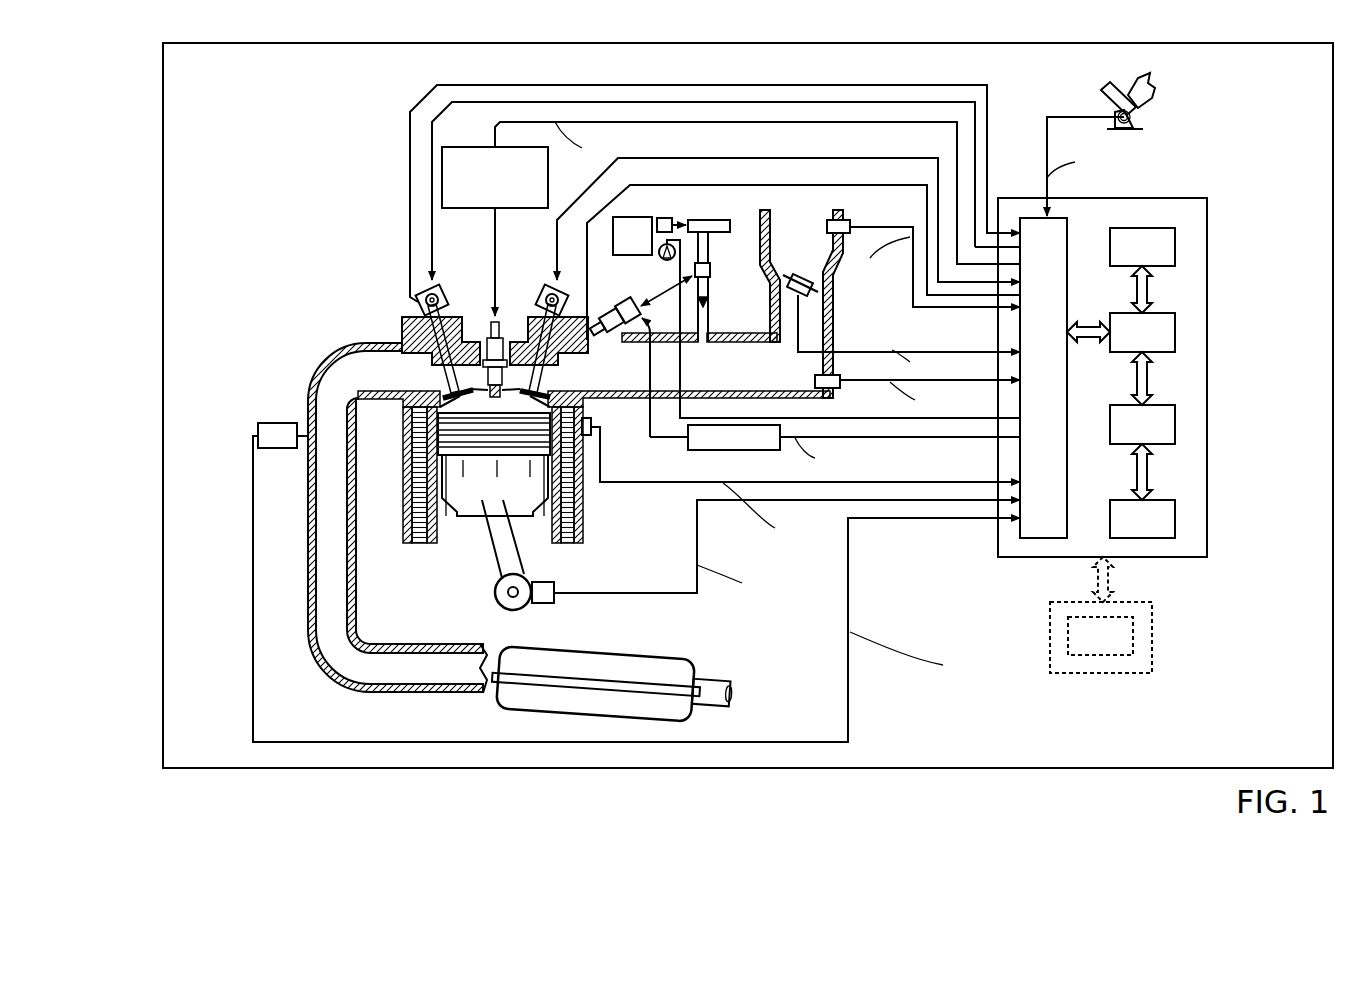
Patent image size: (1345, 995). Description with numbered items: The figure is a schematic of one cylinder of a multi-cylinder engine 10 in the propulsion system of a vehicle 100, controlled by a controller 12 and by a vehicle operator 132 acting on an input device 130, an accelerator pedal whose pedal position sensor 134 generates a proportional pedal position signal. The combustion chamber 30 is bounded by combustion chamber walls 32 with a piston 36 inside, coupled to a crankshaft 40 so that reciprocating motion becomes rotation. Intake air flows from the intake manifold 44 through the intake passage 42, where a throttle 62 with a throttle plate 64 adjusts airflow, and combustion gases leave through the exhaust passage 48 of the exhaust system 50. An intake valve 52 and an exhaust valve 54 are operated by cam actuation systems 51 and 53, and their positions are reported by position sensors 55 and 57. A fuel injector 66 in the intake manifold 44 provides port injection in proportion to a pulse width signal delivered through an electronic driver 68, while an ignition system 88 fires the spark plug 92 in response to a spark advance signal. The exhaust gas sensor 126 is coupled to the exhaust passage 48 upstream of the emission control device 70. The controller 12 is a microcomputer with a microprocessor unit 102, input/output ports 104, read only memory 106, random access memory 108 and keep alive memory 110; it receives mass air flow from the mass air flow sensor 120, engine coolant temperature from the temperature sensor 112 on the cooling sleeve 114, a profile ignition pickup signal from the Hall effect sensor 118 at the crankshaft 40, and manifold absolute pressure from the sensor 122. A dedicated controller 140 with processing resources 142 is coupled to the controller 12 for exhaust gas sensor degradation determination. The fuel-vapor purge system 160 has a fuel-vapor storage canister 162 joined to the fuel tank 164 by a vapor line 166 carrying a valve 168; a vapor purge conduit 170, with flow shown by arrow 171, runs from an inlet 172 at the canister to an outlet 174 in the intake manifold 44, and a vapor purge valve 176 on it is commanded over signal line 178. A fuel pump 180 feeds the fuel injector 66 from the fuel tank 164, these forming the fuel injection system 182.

The vehicle 100 is at (163, 60).
The engine 10 is at (343, 277).
The controller 12 is at (1140, 388).
The combustion chamber 30 is at (492, 405).
The combustion chamber walls 32 is at (443, 550).
The piston 36 is at (497, 492).
The crankshaft 40 is at (505, 605).
The intake passage 42 is at (801, 304).
The intake manifold 44 is at (699, 353).
The exhaust passage 48 is at (417, 527).
The exhaust system 50 is at (290, 368).
The cam actuation system 51 is at (547, 290).
The intake valve 52 is at (540, 378).
The cam actuation system 53 is at (440, 290).
The exhaust valve 54 is at (440, 380).
The position sensor 55 is at (576, 304).
The position sensor 57 is at (420, 303).
The throttle 62 is at (820, 287).
The throttle plate 64 is at (787, 281).
The fuel injector 66 is at (621, 313).
The electronic driver 68 is at (700, 450).
The emission control device 70 is at (657, 655).
The ignition system 88 is at (452, 147).
The spark plug 92 is at (500, 330).
The microprocessor unit 102 is at (1175, 332).
The input/output ports 104 is at (1067, 225).
The read only memory 106 is at (1175, 242).
The random access memory 108 is at (1175, 423).
The keep alive memory 110 is at (1175, 518).
The temperature sensor 112 is at (592, 432).
The cooling sleeve 114 is at (570, 500).
The Hall effect sensor 118 is at (548, 603).
The mass air flow sensor 120 is at (845, 220).
The manifold pressure sensor 122 is at (840, 388).
The exhaust gas sensor 126 is at (258, 426).
The input device 130 is at (1105, 92).
The vehicle operator 132 is at (1152, 86).
The pedal position sensor 134 is at (1140, 121).
The dedicated controller 140 is at (1152, 613).
The processing resources 142 is at (1133, 646).
The fuel-vapor purge system 160 is at (733, 198).
The fuel-vapor storage canister 162 is at (702, 220).
The fuel tank 164 is at (616, 218).
The vapor line 166 is at (681, 225).
The valve 168 is at (659, 217).
The vapor purge conduit 170 is at (710, 255).
The arrow 171 is at (712, 300).
The inlet 172 is at (712, 236).
The outlet 174 is at (713, 337).
The vapor purge valve 176 is at (710, 283).
The signal line 178 is at (826, 417).
The fuel pump 180 is at (664, 259).
The fuel injection system 182 is at (613, 267).